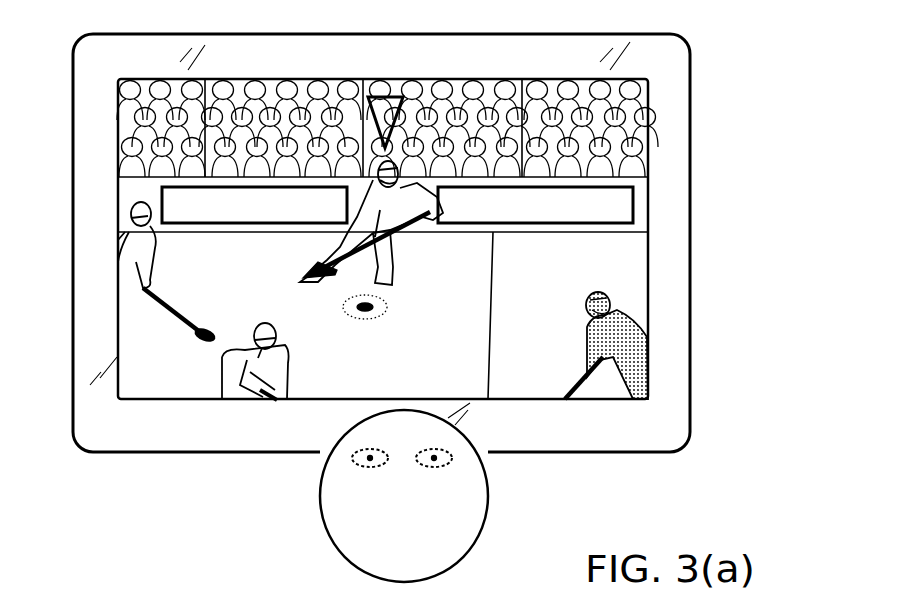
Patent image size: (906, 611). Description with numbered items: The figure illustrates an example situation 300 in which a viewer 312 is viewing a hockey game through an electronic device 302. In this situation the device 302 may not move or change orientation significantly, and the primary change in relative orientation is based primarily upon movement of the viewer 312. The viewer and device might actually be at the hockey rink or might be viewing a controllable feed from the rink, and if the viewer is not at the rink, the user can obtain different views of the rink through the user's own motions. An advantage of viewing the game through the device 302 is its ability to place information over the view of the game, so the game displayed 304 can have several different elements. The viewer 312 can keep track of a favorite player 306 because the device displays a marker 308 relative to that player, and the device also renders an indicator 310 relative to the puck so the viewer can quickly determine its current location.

The situation 300 is at (751, 83).
The electronic device 302 is at (573, 453).
The game displayed 304 is at (357, 274).
The favorite player 306 is at (390, 272).
The marker 308 is at (398, 97).
The indicator 310 is at (375, 320).
The viewer 312 is at (320, 498).